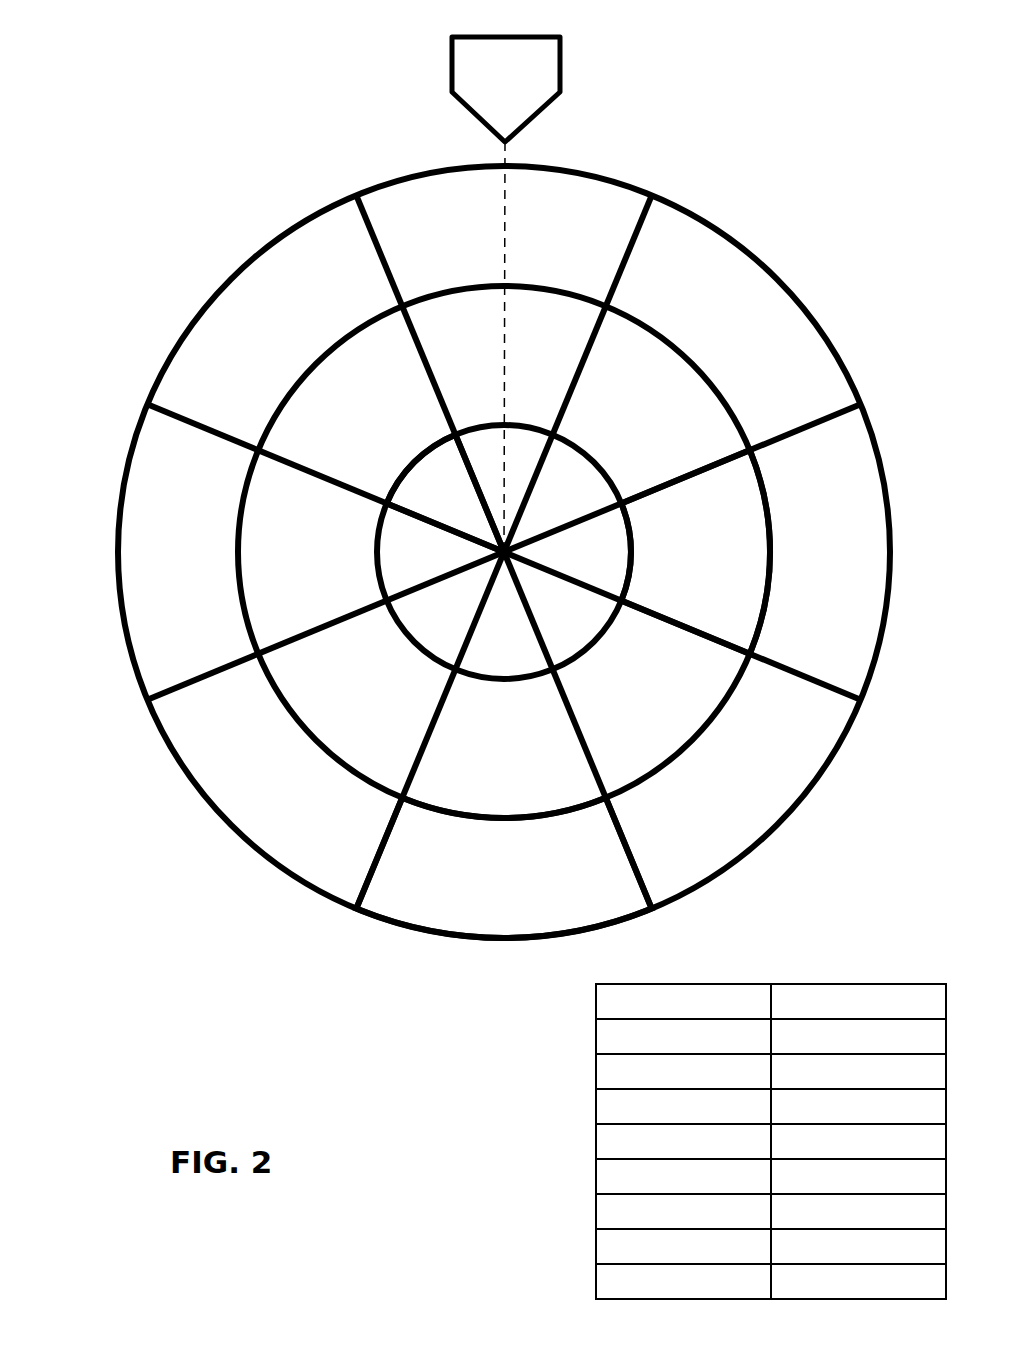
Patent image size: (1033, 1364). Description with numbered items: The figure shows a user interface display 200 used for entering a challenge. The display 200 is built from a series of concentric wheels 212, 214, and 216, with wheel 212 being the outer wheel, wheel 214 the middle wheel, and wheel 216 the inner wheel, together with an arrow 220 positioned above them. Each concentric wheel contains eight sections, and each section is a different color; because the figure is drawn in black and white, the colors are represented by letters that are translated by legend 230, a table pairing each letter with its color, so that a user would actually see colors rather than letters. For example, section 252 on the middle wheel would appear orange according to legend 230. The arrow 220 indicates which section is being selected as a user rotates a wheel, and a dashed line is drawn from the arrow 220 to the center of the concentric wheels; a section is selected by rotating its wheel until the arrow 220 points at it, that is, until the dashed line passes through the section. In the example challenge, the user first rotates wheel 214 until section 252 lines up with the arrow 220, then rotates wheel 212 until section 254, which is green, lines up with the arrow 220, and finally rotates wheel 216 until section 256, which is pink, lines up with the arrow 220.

The user interface display 200 is at (243, 108).
The outer concentric wheel 212 is at (237, 277).
The middle concentric wheel 214 is at (275, 704).
The inner concentric wheel 216 is at (372, 543).
The arrow 220 is at (506, 89).
The legend 230 is at (556, 1078).
The section 252 is at (695, 552).
The section 254 is at (503, 868).
The section 256 is at (445, 493).